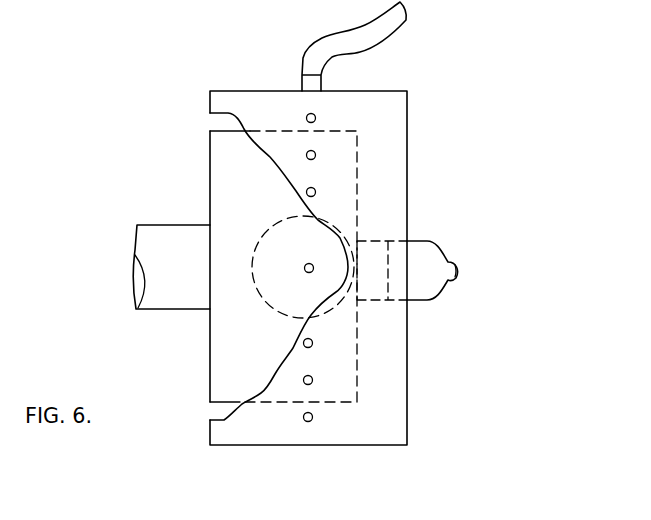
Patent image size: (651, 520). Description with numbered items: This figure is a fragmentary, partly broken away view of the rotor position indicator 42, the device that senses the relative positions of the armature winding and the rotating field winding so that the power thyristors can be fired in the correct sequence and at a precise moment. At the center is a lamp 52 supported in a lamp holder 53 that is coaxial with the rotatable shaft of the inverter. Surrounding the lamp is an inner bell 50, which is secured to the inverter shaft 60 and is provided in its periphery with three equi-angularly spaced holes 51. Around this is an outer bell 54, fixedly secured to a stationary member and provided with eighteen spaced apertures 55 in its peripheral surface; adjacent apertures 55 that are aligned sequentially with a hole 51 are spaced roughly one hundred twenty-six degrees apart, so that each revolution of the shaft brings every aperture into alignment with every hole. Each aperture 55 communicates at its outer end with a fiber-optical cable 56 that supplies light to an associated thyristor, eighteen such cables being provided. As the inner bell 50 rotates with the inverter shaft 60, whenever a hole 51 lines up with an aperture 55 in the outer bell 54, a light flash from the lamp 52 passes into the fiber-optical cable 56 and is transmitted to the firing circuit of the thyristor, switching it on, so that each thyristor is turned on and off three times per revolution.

The rotor position indicator 42 is at (330, 268).
The inner bell 50 is at (212, 402).
The hole 51 is at (306, 271).
The lamp 52 is at (357, 238).
The lamp holder 53 is at (440, 252).
The outer bell 54 is at (407, 395).
The aperture 55 is at (313, 343).
The fiber-optical cable 56 is at (377, 43).
The inverter shaft 60 is at (180, 305).